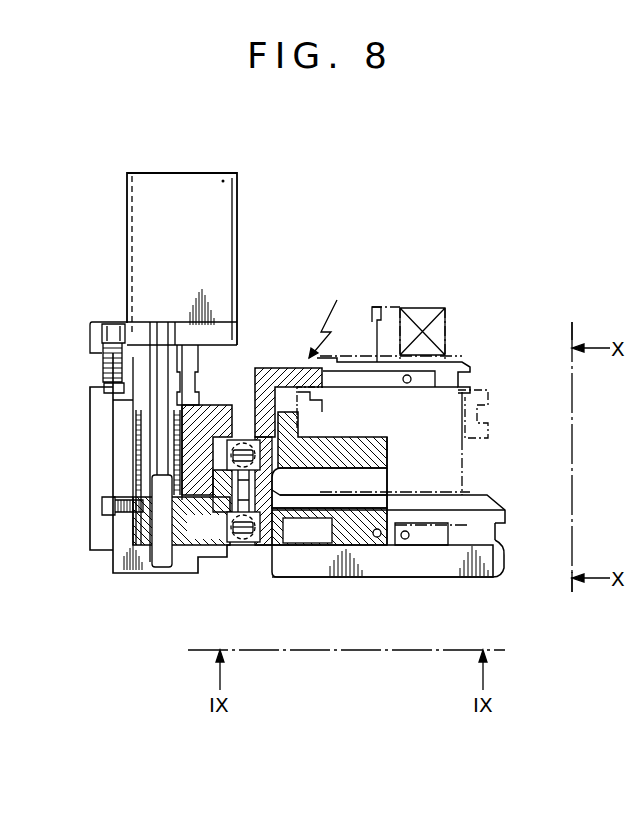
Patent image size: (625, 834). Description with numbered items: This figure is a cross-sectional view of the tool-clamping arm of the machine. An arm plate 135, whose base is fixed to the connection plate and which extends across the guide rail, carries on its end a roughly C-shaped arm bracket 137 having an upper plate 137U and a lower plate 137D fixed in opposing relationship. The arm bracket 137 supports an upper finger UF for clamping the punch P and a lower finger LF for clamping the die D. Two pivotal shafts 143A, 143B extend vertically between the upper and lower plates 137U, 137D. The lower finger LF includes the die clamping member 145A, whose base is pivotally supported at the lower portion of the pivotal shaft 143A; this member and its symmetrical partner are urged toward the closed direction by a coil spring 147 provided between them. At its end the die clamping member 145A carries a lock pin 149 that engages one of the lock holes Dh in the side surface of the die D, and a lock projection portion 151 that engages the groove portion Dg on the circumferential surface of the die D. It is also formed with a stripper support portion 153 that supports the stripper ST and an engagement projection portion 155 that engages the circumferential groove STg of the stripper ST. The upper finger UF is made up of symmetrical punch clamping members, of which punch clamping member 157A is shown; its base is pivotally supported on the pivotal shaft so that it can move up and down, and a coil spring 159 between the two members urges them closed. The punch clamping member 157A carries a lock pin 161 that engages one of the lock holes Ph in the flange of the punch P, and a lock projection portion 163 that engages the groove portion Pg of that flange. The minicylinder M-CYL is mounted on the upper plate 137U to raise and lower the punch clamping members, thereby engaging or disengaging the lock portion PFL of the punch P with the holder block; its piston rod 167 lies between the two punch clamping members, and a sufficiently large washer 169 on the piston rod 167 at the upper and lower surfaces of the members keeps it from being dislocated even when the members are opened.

The minicylinder M-CYL is at (207, 231).
The arm plate 135 is at (92, 450).
The arm bracket 137 is at (123, 418).
The upper plate 137U is at (232, 333).
The lower plate 137D is at (136, 572).
The pivotal shaft 143A is at (125, 362).
The pivotal shaft 143B is at (66, 382).
The die clamping member 145A is at (213, 556).
The coil spring 147 is at (256, 556).
The lock pin 149 is at (378, 540).
The lock projection portion 151 is at (281, 578).
The stripper support portion 153 is at (387, 452).
The engagement projection portion 155 is at (308, 413).
The punch clamping member 157A is at (262, 368).
The coil spring 159 is at (329, 488).
The lock pin 161 is at (374, 362).
The lock projection portion 163 is at (303, 371).
The piston rod 167 is at (195, 364).
The washer 169 is at (198, 406).
The upper finger UF is at (323, 319).
The lock portion of the punch PFL is at (445, 330).
The lock hole Ph is at (410, 380).
The groove portion Pg is at (467, 382).
The circumferential groove STg is at (486, 422).
The stripper ST is at (487, 442).
The punch P is at (452, 481).
The lower finger LF is at (298, 557).
The lock hole Dh is at (406, 540).
The die D is at (445, 576).
The groove portion Dg is at (487, 570).